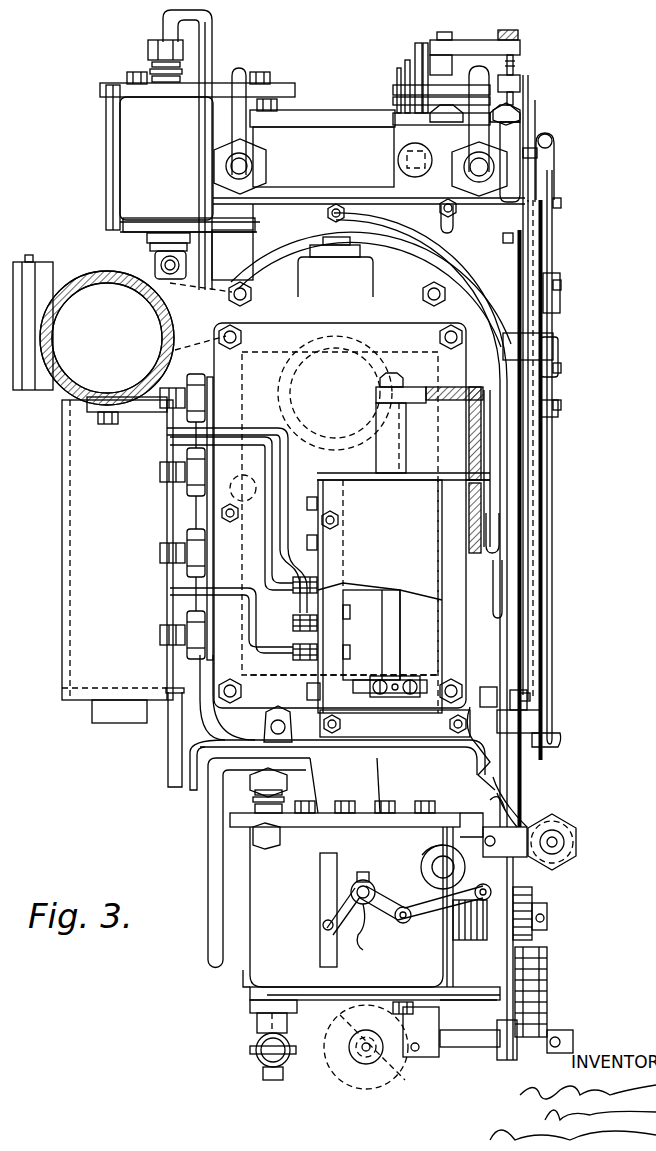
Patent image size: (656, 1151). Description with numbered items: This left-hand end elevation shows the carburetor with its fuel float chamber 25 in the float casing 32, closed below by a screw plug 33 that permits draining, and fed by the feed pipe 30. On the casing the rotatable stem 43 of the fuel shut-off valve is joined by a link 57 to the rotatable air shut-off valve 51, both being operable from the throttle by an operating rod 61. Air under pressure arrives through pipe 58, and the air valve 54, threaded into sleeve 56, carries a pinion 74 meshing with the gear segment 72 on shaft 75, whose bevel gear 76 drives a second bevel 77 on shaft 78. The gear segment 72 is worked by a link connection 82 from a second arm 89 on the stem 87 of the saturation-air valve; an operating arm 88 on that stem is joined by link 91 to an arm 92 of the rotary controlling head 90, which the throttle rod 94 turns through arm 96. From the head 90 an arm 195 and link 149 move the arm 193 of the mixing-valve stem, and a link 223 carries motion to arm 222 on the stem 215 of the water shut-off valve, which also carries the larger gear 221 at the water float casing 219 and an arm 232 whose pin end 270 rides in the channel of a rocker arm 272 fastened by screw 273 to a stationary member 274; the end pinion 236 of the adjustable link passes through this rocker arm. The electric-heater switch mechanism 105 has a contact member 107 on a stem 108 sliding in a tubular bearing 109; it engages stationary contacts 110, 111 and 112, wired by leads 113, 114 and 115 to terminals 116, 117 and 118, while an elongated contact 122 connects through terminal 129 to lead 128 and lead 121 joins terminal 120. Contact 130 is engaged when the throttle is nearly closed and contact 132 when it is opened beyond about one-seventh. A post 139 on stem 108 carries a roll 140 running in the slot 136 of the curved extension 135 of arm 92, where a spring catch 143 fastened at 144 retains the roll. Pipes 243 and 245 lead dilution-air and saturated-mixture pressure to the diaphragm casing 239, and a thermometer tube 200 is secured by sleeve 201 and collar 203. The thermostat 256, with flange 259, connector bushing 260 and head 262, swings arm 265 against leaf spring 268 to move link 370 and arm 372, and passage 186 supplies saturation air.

The thermometer tube 200 is at (238, 99).
The collar 203 is at (222, 158).
The sleeve 201 is at (232, 168).
The larger gear 221 is at (352, 118).
The float casing 219 is at (245, 222).
The swinging arm 265 is at (521, 47).
The leaf spring 268 is at (440, 66).
The thermostat 256 is at (446, 87).
The head 262 is at (514, 64).
The link 370 is at (521, 99).
The pin end 270 is at (422, 60).
The rocker arm 272 is at (416, 60).
The screw 273 is at (412, 73).
The arm 232 is at (394, 88).
The end pinion 236 is at (395, 104).
The annular flange 259 is at (432, 115).
The connector bushing 260 is at (475, 118).
The stationary member 274 is at (398, 166).
The pipe 243 is at (448, 229).
The stem 215 is at (547, 134).
The arm 222 is at (546, 186).
The arm 193 is at (539, 256).
The link 223 is at (533, 258).
The link 149 is at (550, 305).
The link 91 is at (553, 478).
The arm 96 is at (520, 236).
The throttle rod 94 is at (519, 280).
The rotary controlling head 90 is at (527, 334).
The arm 92 is at (559, 381).
The arm 195 is at (530, 414).
The spring catch 143 is at (485, 467).
The pipe 245 is at (386, 222).
The terminal 118 is at (193, 394).
The terminal 117 is at (193, 478).
The terminal 116 is at (190, 541).
The terminal 120 is at (197, 634).
The lead 115 is at (262, 394).
The lead 114 is at (243, 515).
The lead 113 is at (232, 592).
The passage 186 is at (241, 717).
The lead 121 is at (177, 745).
The lead 128 is at (200, 782).
The feed pipe 30 is at (219, 832).
The post 139 is at (410, 392).
The roll 140 is at (485, 400).
The tubular bearing 109 is at (380, 433).
The stem 108 is at (390, 374).
The curved extension 135 is at (476, 441).
The slot 136 is at (473, 494).
The catch fastening point 144 is at (487, 572).
The contact 132 is at (341, 516).
The stationary contact member 112 is at (341, 579).
The stationary contact member 111 is at (345, 624).
The stationary contact member 110 is at (345, 651).
The arm 372 is at (483, 597).
The elongated contact 122 is at (444, 548).
The contact member 107 is at (423, 690).
The switch mechanism 105 is at (306, 690).
The contact 130 is at (347, 714).
The terminal 129 is at (498, 688).
The second arm 89 is at (528, 699).
The operating arm 88 is at (541, 740).
The stem 87 is at (484, 750).
The link connection 82 is at (513, 781).
The casing 239 is at (404, 758).
The float chamber 25 is at (263, 948).
The float casing 32 is at (250, 984).
The screw plug 33 is at (252, 1012).
The operating rod 61 is at (324, 867).
The rotatable stem 43 is at (370, 923).
The link 57 is at (428, 920).
The rotatable shut-off valve 51 is at (432, 860).
The sleeve 56 is at (470, 940).
The pipe 58 is at (565, 847).
The pinion 74 is at (533, 900).
The air valve 54 is at (545, 918).
The gear segment 72 is at (541, 981).
The shaft 75 is at (483, 1038).
The bevel gear 76 is at (400, 1063).
The shaft 78 is at (366, 1048).
The second bevel 77 is at (330, 1052).